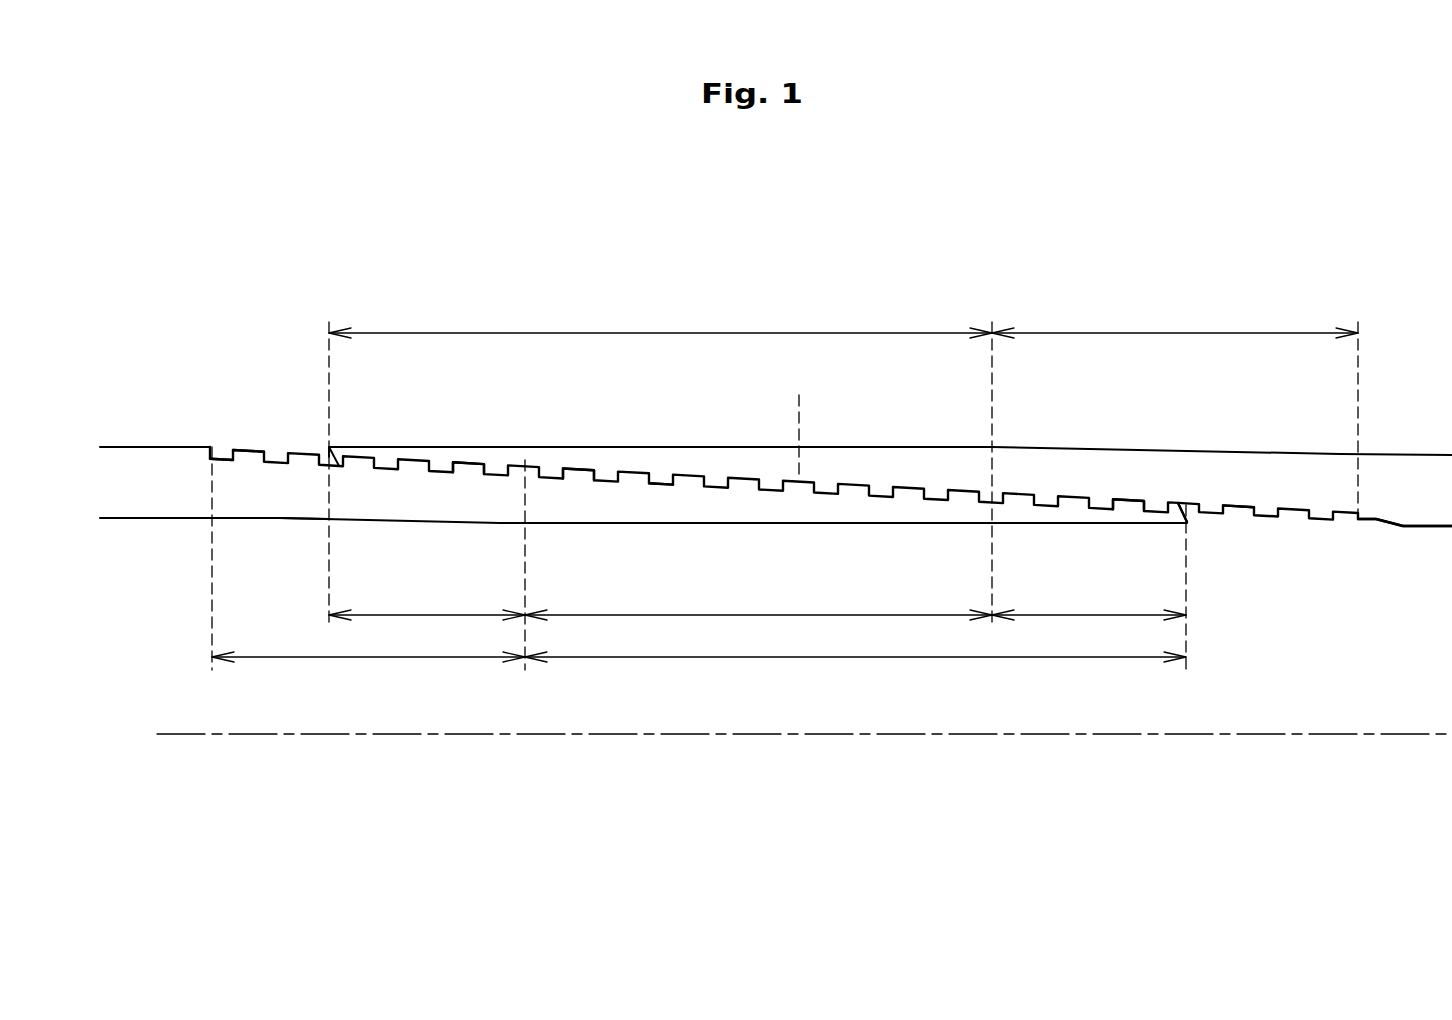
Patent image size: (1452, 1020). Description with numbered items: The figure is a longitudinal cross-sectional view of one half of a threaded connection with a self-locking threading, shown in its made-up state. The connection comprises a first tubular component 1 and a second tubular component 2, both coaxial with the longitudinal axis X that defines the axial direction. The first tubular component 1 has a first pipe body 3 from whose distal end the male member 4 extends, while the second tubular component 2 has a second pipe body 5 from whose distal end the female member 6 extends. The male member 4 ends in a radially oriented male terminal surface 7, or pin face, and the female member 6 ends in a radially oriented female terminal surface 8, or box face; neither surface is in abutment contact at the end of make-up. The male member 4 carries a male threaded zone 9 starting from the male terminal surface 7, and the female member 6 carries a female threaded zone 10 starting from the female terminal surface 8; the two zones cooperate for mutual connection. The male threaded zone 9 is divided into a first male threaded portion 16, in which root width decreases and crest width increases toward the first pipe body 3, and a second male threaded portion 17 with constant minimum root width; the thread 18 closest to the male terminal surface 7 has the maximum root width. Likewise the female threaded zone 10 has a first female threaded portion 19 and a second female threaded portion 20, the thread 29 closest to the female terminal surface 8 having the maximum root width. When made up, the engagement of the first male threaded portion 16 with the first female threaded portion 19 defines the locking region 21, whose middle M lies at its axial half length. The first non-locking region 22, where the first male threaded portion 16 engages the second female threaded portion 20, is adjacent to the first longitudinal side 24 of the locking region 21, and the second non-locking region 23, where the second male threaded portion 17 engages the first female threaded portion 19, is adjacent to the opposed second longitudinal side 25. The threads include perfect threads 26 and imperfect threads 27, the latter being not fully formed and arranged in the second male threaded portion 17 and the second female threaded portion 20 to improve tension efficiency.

The first tubular component 1 is at (270, 543).
The second tubular component 2 is at (1265, 433).
The first pipe body 3 is at (158, 492).
The male member 4 is at (652, 504).
The second pipe body 5 is at (1400, 478).
The female member 6 is at (750, 453).
The male terminal surface 7 is at (1187, 522).
The female terminal surface 8 is at (329, 450).
The male threaded zone 9 is at (472, 466).
The female threaded zone 10 is at (663, 478).
The first male threaded portion 16 is at (843, 658).
The second male threaded portion 17 is at (377, 660).
The thread closest to the male terminal surface 18 is at (1130, 507).
The first female threaded portion 19 is at (643, 333).
The second female threaded portion 20 is at (1167, 333).
The locking region 21 is at (765, 615).
The first non-locking region 22 is at (1093, 614).
The second non-locking region 23 is at (443, 614).
The first longitudinal side of the locking region 24 is at (990, 512).
The second longitudinal side of the locking region 25 is at (527, 497).
The perfect threads 26 is at (578, 466).
The imperfect threads 27 is at (258, 447).
The thread closest to the female terminal surface 29 is at (228, 457).
The middle of the locking region M is at (799, 422).
The longitudinal axis X is at (570, 737).